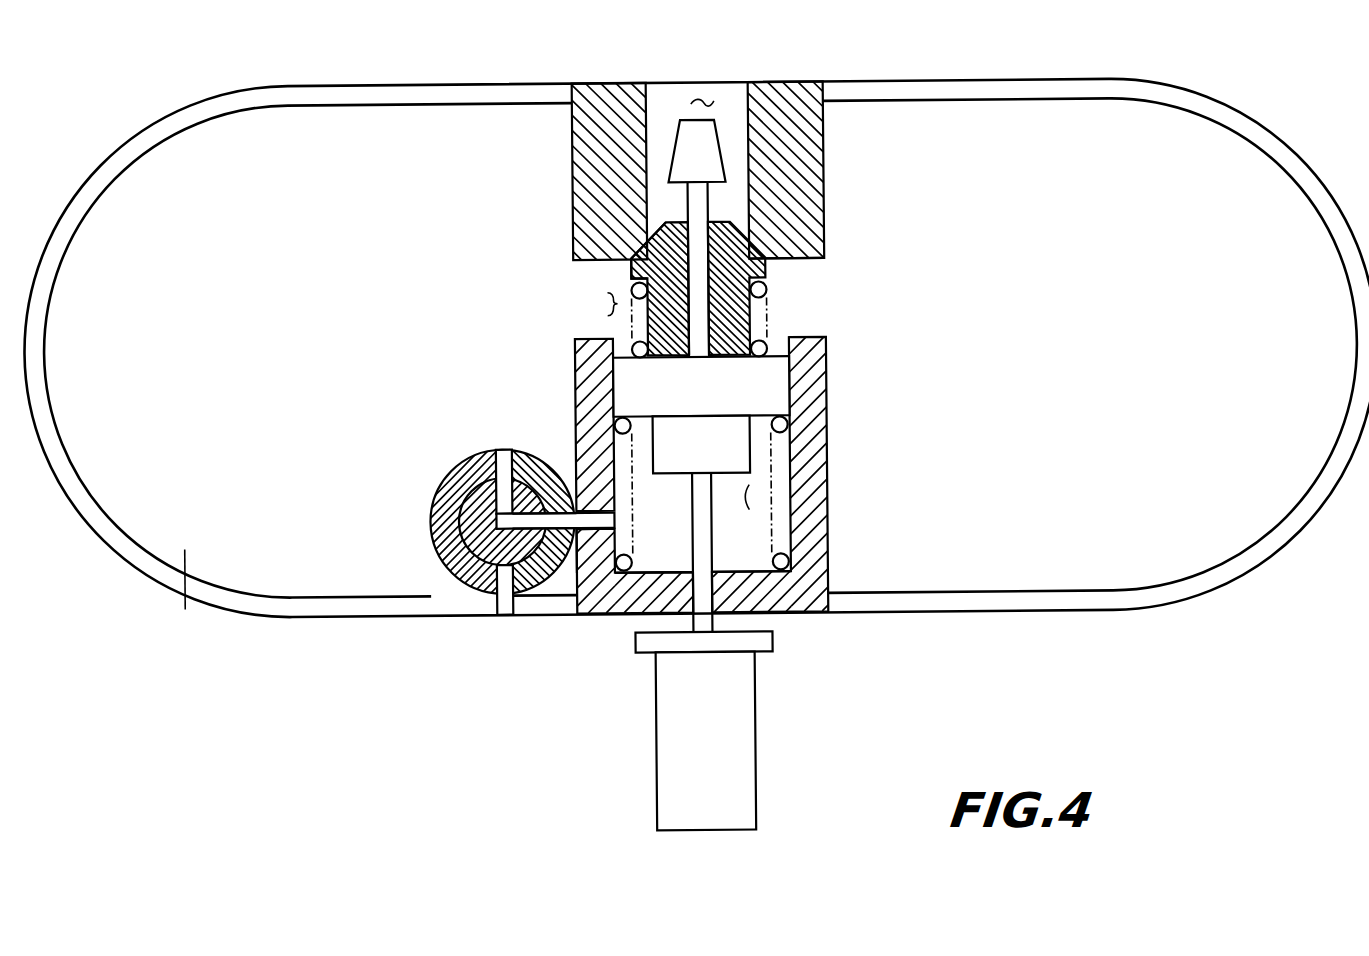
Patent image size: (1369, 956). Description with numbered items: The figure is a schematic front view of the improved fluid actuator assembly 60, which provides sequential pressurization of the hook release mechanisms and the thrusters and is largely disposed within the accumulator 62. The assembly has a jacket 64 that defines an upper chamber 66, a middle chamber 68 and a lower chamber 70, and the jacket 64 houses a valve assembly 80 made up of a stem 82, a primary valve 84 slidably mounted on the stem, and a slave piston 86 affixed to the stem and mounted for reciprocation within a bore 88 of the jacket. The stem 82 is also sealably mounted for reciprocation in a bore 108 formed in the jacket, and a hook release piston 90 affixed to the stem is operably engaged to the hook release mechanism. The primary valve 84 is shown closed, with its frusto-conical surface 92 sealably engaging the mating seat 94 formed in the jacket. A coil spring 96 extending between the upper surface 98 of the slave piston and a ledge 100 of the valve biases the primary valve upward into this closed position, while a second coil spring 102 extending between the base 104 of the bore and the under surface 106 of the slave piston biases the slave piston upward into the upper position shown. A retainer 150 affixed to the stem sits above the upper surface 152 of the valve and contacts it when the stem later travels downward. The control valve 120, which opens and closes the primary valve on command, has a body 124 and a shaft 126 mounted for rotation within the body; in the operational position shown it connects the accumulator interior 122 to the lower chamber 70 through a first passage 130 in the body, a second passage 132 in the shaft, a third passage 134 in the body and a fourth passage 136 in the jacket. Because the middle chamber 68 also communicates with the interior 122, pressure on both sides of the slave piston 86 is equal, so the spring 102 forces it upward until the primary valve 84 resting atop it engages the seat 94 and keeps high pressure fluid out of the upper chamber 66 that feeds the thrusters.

The fluid actuator assembly 60 is at (756, 365).
The accumulator 62 is at (695, 348).
The jacket 64 is at (742, 347).
The upper chamber 66 is at (719, 71).
The middle chamber 68 is at (583, 312).
The lower chamber 70 is at (818, 492).
The valve assembly 80 is at (834, 288).
The stem 82 is at (787, 401).
The primary valve 84 is at (763, 287).
The slave piston 86 is at (754, 414).
The bore 88 is at (586, 492).
The hook release piston 90 is at (739, 731).
The frusto-conical surface 92 is at (612, 214).
The seat 94 is at (608, 275).
The coil spring 96 is at (584, 335).
The upper surface 98 is at (831, 339).
The ledge 100 is at (816, 306).
The coil spring 102 is at (589, 614).
The base 104 is at (629, 631).
The under surface 106 is at (574, 412).
The bore 108 is at (743, 616).
The control valve 120 is at (469, 534).
The interior 122 is at (157, 587).
The body 124 is at (468, 522).
The shaft 126 is at (443, 609).
The first passage 130 is at (458, 465).
The second passage 132 is at (488, 495).
The third passage 134 is at (522, 580).
The fourth passage 136 is at (573, 588).
The retainer 150 is at (753, 108).
The upper surface 152 is at (593, 219).